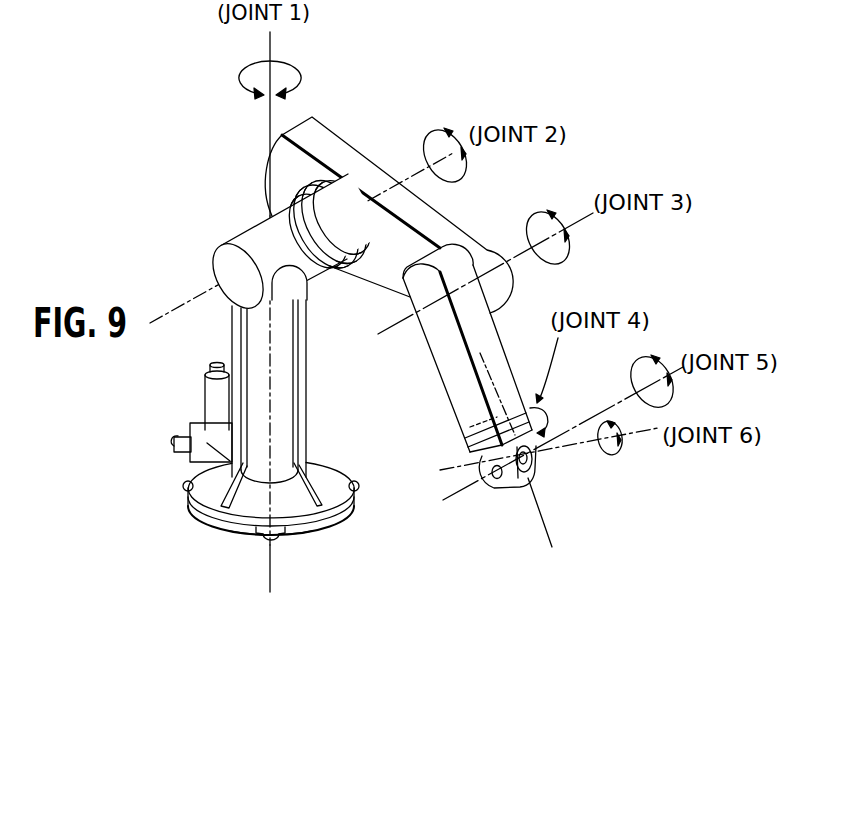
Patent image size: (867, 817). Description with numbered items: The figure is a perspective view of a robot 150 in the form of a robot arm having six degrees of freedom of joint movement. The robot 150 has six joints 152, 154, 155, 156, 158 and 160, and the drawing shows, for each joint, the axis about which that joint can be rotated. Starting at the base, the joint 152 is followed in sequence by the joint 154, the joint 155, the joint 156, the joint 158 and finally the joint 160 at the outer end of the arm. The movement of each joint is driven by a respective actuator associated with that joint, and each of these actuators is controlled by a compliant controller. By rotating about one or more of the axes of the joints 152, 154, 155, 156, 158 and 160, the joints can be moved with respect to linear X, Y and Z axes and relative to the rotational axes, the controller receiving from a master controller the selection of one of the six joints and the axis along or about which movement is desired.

The robot 150 is at (220, 230).
The joint 152 is at (315, 290).
The joint 154 is at (366, 178).
The joint 155 is at (489, 247).
The joint 156 is at (460, 446).
The joint 158 is at (496, 481).
The joint 160 is at (539, 459).